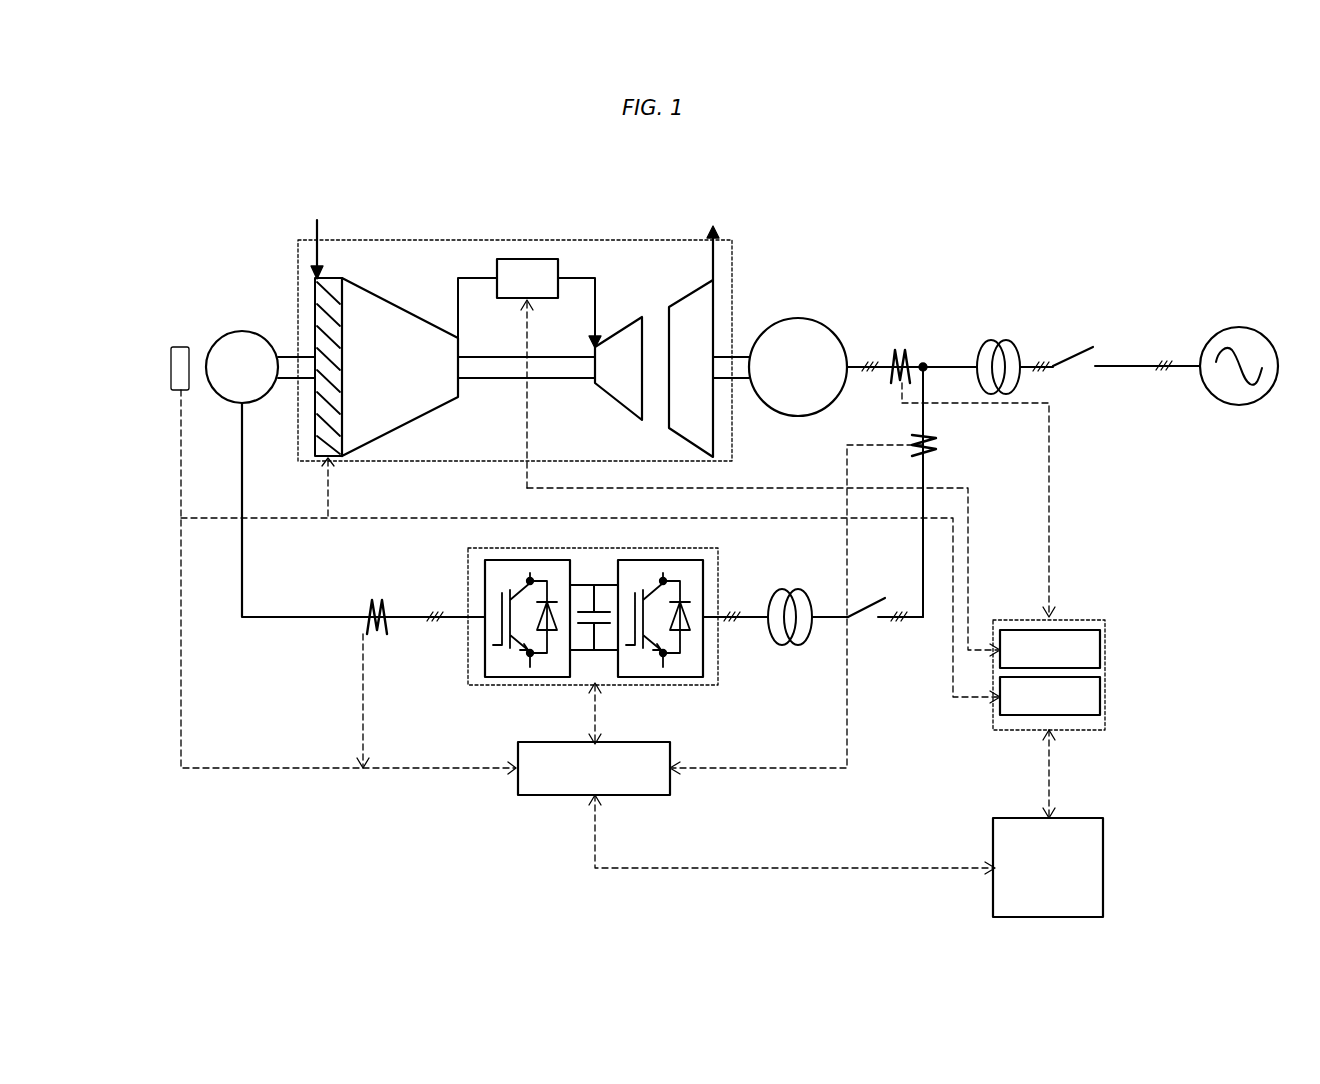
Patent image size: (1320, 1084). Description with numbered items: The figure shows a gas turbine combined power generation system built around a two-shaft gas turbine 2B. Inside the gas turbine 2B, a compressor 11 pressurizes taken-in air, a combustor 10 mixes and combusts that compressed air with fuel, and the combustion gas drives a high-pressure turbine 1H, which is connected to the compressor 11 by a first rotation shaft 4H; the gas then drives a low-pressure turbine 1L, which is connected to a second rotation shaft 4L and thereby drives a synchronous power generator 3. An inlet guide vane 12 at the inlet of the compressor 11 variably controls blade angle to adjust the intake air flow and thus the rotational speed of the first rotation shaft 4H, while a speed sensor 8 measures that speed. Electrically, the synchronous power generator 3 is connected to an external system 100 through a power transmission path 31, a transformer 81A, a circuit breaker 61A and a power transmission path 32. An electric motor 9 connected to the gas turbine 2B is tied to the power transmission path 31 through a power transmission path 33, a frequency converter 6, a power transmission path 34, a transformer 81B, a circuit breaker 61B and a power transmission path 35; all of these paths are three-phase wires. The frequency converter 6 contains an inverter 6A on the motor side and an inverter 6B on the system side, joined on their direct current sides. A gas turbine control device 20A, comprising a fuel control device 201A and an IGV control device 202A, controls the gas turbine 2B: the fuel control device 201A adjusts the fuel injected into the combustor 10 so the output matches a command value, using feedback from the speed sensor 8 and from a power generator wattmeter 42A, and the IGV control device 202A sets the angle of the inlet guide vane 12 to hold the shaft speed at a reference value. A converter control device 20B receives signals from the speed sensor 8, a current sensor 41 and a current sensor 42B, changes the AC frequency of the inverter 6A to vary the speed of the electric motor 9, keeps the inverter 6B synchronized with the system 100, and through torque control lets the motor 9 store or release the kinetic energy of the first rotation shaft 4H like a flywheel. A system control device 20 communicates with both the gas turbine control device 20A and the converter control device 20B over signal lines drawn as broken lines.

The speed sensor 8 is at (175, 346).
The electric motor 9 is at (238, 331).
The inlet guide vane 12 is at (328, 280).
The compressor 11 is at (390, 298).
The combustor 10 is at (520, 262).
The high-pressure turbine 1H is at (632, 318).
The low-pressure turbine 1L is at (696, 282).
The two-shaft gas turbine 2B is at (733, 290).
The synchronous power generator 3 is at (814, 320).
The power generator wattmeter 42A is at (896, 350).
The power transmission path 31 is at (935, 360).
The transformer 81A is at (1000, 342).
The circuit breaker 61A is at (1073, 346).
The power transmission path 32 is at (1128, 366).
The external system 100 is at (1233, 330).
The first rotation shaft 4H is at (520, 379).
The second rotation shaft 4L is at (745, 385).
The current sensor 42B is at (945, 446).
The power transmission path 33 is at (306, 620).
The current sensor 41 is at (364, 632).
The frequency converter 6 is at (587, 646).
The inverter 6A is at (486, 684).
The inverter 6B is at (712, 686).
The power transmission path 34 is at (776, 620).
The transformer 81B is at (810, 612).
The circuit breaker 61B is at (865, 616).
The power transmission path 35 is at (914, 620).
The gas turbine control device 20A is at (692, 653).
The fuel control device 201A is at (1096, 642).
The IGV control device 202A is at (1096, 692).
The converter control device 20B is at (672, 760).
The system control device 20 is at (1104, 844).